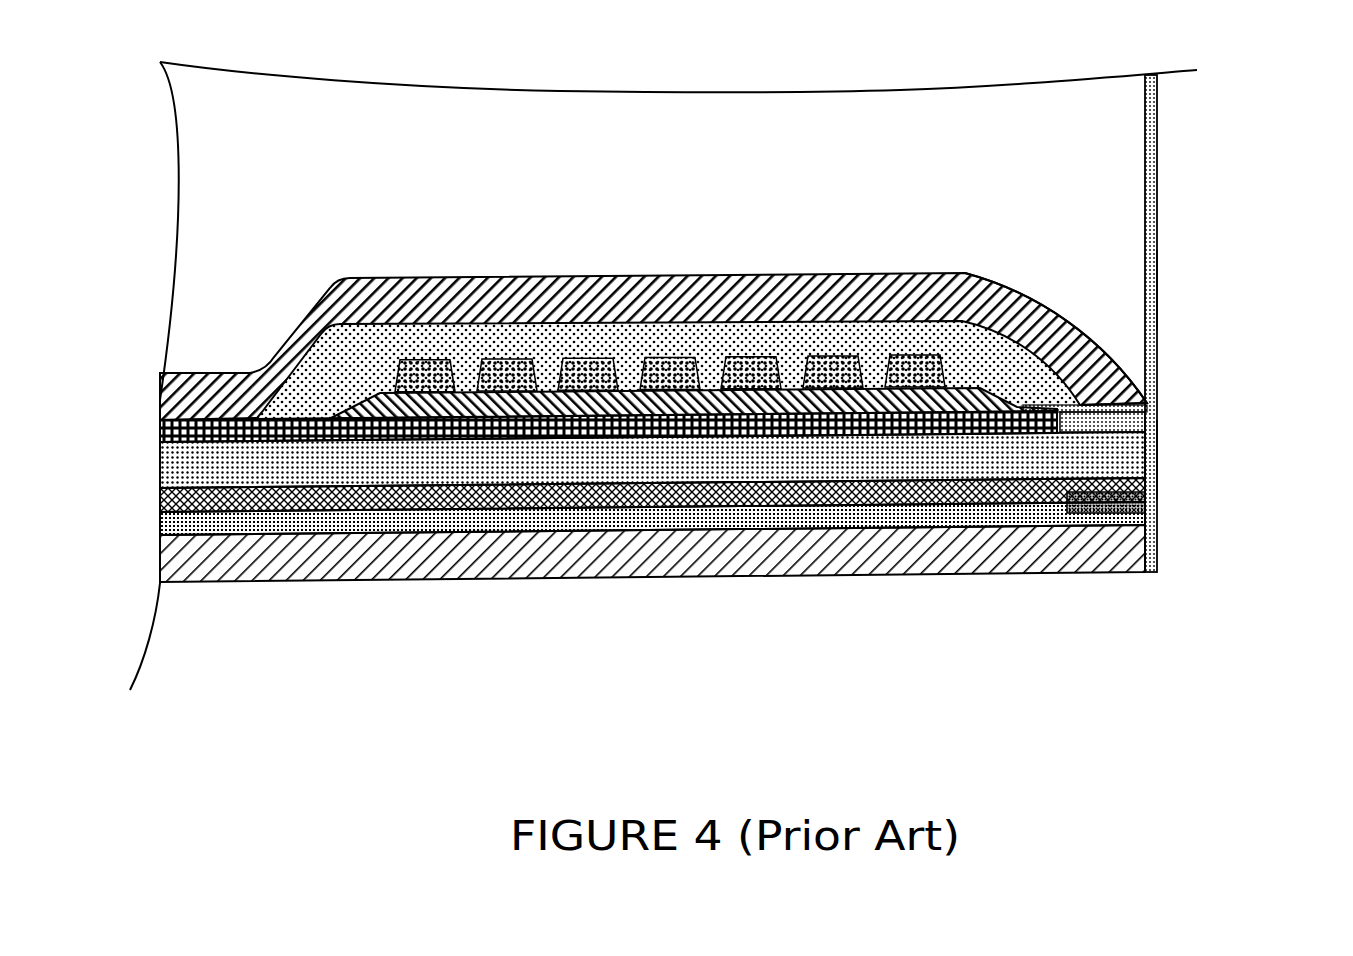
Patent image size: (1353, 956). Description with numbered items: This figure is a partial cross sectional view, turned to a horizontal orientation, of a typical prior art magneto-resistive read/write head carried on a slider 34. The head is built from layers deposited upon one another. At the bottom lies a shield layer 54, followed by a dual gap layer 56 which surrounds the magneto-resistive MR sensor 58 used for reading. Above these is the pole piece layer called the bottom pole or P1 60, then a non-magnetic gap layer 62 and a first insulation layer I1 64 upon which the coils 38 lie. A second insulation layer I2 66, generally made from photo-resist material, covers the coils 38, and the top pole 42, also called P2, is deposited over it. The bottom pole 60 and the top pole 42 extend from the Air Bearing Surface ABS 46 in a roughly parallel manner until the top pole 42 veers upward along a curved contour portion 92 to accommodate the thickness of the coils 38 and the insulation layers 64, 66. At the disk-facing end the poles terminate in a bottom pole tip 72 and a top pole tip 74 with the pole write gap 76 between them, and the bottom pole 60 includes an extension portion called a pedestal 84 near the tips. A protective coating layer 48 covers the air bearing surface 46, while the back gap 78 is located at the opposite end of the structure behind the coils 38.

The slider 34 is at (561, 158).
The coils 38 is at (512, 370).
The top pole 42 is at (840, 283).
The air bearing surface 46 is at (1172, 292).
The coating layer 48 is at (1158, 200).
The shield layer 54 is at (1033, 553).
The dual gap layer 56 is at (808, 490).
The MR sensor 58 is at (1133, 500).
The bottom pole 60 is at (610, 455).
The non-magnetic gap layer 62 is at (218, 443).
The first insulation layer 64 is at (1000, 395).
The second insulation layer 66 is at (897, 340).
The bottom pole tip 72 is at (1172, 460).
The top pole tip 74 is at (1160, 392).
The pole write gap 76 is at (1150, 408).
The back gap 78 is at (181, 376).
The pedestal 84 is at (1128, 425).
The curved contour portion 92 is at (1040, 275).